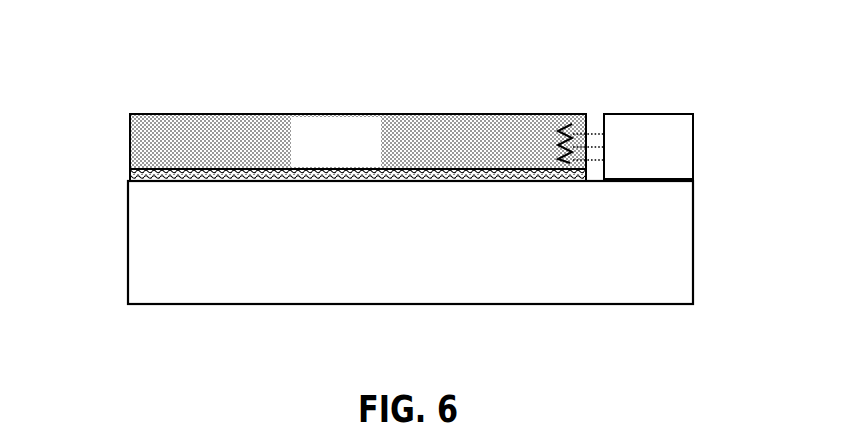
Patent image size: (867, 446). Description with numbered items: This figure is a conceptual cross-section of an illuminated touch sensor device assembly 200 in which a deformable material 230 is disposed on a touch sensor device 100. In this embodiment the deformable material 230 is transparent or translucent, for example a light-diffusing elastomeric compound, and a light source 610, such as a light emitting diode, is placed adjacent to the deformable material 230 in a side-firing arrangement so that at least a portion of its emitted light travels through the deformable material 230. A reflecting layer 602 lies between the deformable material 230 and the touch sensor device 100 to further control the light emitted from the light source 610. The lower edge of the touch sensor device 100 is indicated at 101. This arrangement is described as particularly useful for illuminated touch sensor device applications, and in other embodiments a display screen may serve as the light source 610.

The touch sensor device assembly 200 is at (128, 35).
The deformable material 230 is at (312, 156).
The reflecting layer 602 is at (129, 181).
The touch sensor device 100 is at (387, 257).
The substrate surface 101 is at (144, 304).
The light source 610 is at (625, 160).